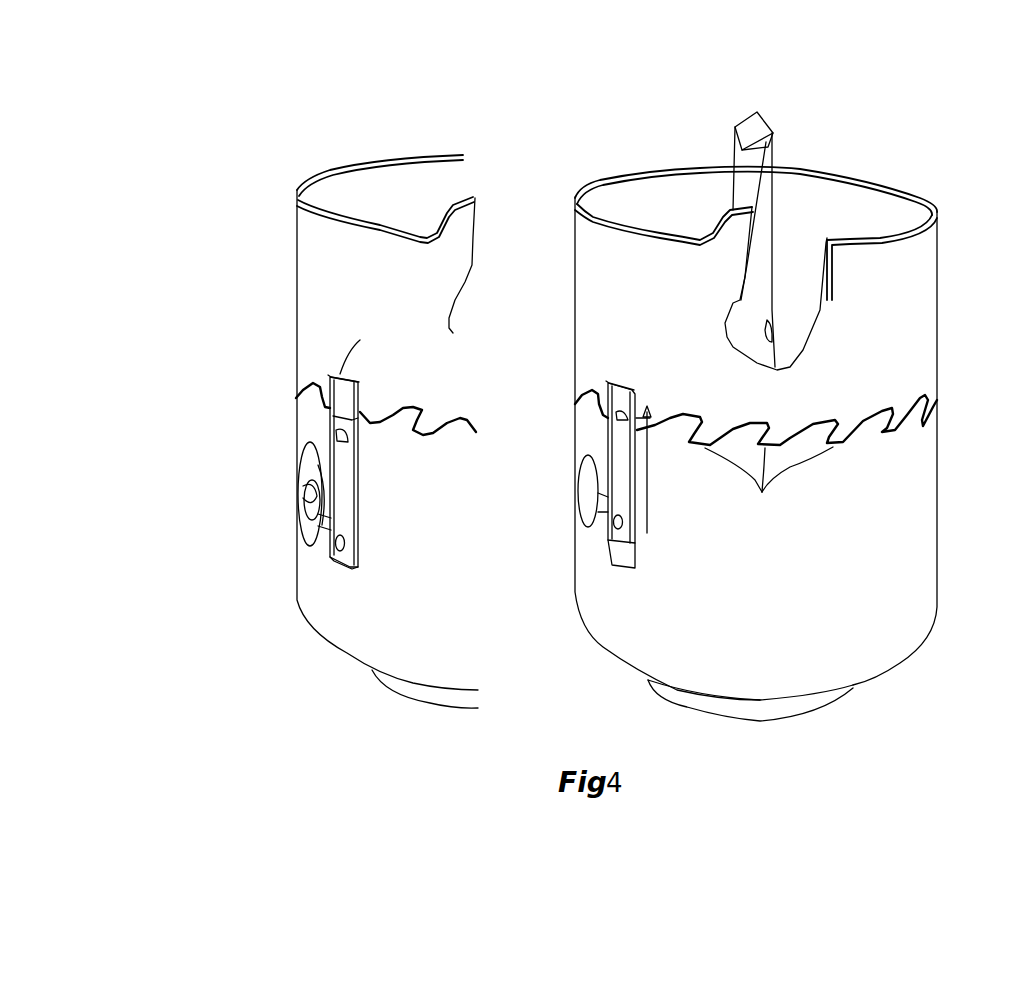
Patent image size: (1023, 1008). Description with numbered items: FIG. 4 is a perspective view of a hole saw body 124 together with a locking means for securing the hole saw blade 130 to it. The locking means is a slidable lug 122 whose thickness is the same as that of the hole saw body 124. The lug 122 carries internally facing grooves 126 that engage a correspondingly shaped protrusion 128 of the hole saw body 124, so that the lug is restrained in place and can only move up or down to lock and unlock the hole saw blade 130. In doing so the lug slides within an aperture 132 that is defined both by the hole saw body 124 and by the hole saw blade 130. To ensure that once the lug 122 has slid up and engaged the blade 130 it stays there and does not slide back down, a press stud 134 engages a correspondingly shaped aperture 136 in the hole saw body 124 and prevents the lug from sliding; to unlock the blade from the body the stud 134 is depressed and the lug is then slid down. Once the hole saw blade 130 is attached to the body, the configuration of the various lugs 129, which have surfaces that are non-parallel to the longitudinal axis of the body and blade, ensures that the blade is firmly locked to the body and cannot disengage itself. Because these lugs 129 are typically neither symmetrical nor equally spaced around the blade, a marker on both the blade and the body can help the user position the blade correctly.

The slidable lug 122 is at (342, 467).
The hole saw body 124 is at (914, 562).
The internally facing grooves 126 is at (357, 522).
The protrusion 128 is at (633, 567).
The lugs 129 is at (769, 484).
The hole saw blade 130 is at (916, 366).
The aperture 132 is at (333, 375).
The press stud 134 is at (307, 545).
The aperture 136 is at (317, 453).